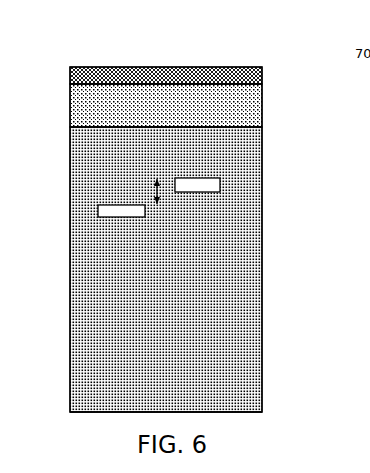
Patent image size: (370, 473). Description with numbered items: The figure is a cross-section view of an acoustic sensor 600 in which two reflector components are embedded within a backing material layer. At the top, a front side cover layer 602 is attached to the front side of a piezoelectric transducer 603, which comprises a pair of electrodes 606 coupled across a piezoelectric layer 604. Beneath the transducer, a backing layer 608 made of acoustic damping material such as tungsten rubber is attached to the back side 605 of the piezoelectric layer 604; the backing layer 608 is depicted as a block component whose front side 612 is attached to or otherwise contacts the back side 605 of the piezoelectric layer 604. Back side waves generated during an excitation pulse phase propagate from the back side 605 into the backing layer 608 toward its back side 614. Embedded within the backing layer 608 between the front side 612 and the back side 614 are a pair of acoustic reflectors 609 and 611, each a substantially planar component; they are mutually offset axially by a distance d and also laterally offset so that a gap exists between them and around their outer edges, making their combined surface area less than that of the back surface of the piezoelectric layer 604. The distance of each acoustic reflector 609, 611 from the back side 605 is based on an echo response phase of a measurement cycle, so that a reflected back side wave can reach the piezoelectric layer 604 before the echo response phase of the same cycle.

The acoustic sensor 600 is at (177, 219).
The front side cover layer 602 is at (200, 72).
The piezoelectric transducer 603 is at (140, 76).
The piezoelectric layer 604 is at (135, 112).
The back side of piezoelectric layer 605 is at (189, 123).
The electrodes 606 is at (85, 86).
The backing layer 608 is at (110, 273).
The acoustic reflector 609 is at (130, 218).
The acoustic reflector 611 is at (198, 193).
The front side of backing layer 612 is at (160, 129).
The back side of backing layer 614 is at (181, 408).